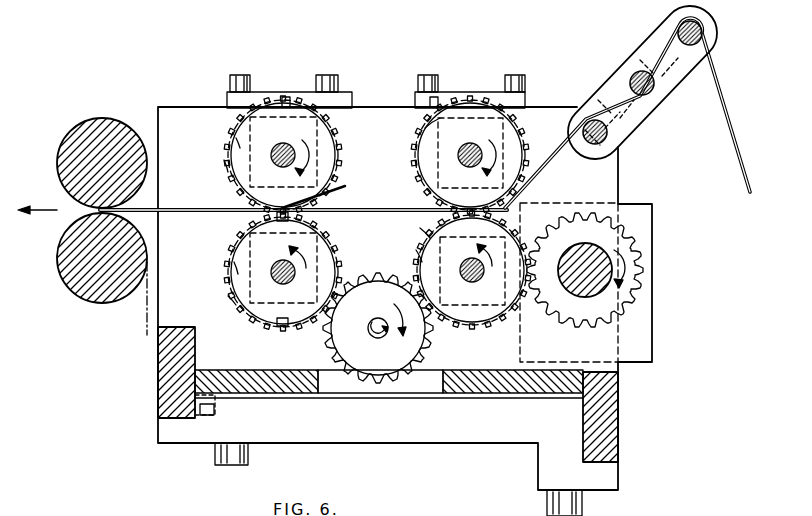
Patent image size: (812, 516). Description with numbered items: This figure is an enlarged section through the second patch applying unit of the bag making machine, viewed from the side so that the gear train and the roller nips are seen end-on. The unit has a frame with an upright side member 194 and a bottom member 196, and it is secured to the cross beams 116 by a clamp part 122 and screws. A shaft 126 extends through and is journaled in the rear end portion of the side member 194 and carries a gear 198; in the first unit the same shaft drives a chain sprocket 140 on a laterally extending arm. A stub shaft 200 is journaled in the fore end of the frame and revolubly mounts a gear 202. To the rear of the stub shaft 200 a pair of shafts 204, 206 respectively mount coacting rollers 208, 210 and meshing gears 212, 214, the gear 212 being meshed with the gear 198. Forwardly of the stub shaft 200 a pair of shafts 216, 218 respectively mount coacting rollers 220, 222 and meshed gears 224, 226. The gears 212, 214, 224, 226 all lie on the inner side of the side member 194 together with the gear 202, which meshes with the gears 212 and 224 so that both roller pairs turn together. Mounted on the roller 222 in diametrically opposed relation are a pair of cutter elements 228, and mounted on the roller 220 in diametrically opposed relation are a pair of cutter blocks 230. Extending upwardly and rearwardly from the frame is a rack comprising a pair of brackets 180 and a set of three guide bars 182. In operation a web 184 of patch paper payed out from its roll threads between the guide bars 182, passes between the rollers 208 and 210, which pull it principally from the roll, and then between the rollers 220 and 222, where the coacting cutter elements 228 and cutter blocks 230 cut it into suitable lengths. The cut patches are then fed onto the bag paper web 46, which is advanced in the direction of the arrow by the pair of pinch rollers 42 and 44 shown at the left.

The pinch roller 42 is at (57, 268).
The pinch roller 44 is at (57, 163).
The web of bag material 46 is at (147, 326).
The cross beams 116 is at (158, 375).
The clamp part 122 is at (415, 435).
The shaft 126 is at (605, 258).
The chain sprocket 140 is at (532, 503).
The brackets 180 is at (633, 62).
The guide bars 182 is at (703, 37).
The web of patch paper 184 is at (726, 126).
The side member 194 is at (190, 113).
The bottom member 196 is at (487, 378).
The gear 198 is at (640, 266).
The stub shaft 200 is at (378, 328).
The gear 202 is at (428, 349).
The shaft 204 is at (478, 263).
The shaft 206 is at (478, 150).
The roller 208 is at (426, 234).
The roller 210 is at (431, 133).
The gear 212 is at (418, 257).
The gear 214 is at (438, 97).
The shaft 216 is at (280, 266).
The shaft 218 is at (280, 150).
The roller 220 is at (237, 268).
The roller 222 is at (237, 143).
The gear 224 is at (232, 300).
The gear 226 is at (226, 166).
The cutter elements 228 is at (294, 97).
The cutter blocks 230 is at (256, 219).